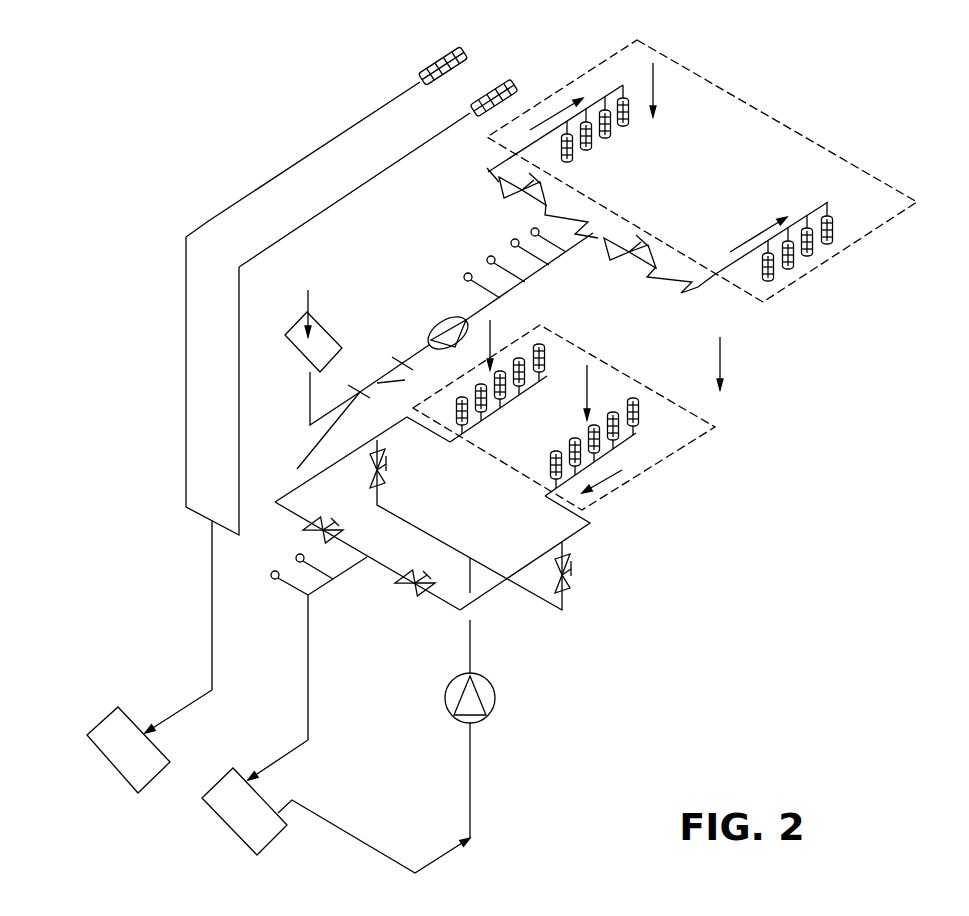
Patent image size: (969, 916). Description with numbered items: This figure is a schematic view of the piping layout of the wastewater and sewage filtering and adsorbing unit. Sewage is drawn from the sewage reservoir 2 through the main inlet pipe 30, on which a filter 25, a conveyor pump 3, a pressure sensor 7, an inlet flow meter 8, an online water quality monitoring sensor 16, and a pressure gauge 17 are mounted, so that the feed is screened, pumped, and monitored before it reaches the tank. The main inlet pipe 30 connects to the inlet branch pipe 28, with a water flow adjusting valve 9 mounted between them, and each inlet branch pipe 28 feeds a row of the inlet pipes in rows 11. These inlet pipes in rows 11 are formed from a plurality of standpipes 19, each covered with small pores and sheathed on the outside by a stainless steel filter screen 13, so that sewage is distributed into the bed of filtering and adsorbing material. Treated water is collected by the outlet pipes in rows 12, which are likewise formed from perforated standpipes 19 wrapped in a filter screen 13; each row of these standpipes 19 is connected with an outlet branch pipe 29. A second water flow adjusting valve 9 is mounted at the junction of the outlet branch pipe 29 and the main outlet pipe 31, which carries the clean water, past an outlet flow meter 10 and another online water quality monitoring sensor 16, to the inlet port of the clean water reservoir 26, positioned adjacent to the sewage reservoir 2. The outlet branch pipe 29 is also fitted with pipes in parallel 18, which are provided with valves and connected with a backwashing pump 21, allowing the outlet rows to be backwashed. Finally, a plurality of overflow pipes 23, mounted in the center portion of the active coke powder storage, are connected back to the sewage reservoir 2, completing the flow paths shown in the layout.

The sewage reservoir 2 is at (317, 342).
The conveyor pump 3 is at (442, 317).
The pressure sensor 7 is at (465, 274).
The inlet flow meter 8 is at (488, 257).
The water flow adjusting valve 9 is at (398, 580).
The outlet flow meter 10 is at (242, 579).
The inlet pipes in rows 11 is at (820, 170).
The outlet pipes in rows 12 is at (650, 455).
The filter screen 13 is at (640, 410).
The online water quality monitoring sensor 16 is at (512, 240).
The pressure gauge 17 is at (538, 235).
The pipes in parallel 18 is at (429, 534).
The standpipes 19 is at (545, 351).
The backwashing pump 21 is at (448, 708).
The overflow pipes 23 is at (207, 222).
The filter 25 is at (388, 370).
The clean water reservoir 26 is at (228, 828).
The inlet branch pipe 28 is at (715, 277).
The outlet branch pipe 29 is at (572, 540).
The main inlet pipe 30 is at (265, 469).
The main outlet pipe 31 is at (308, 708).